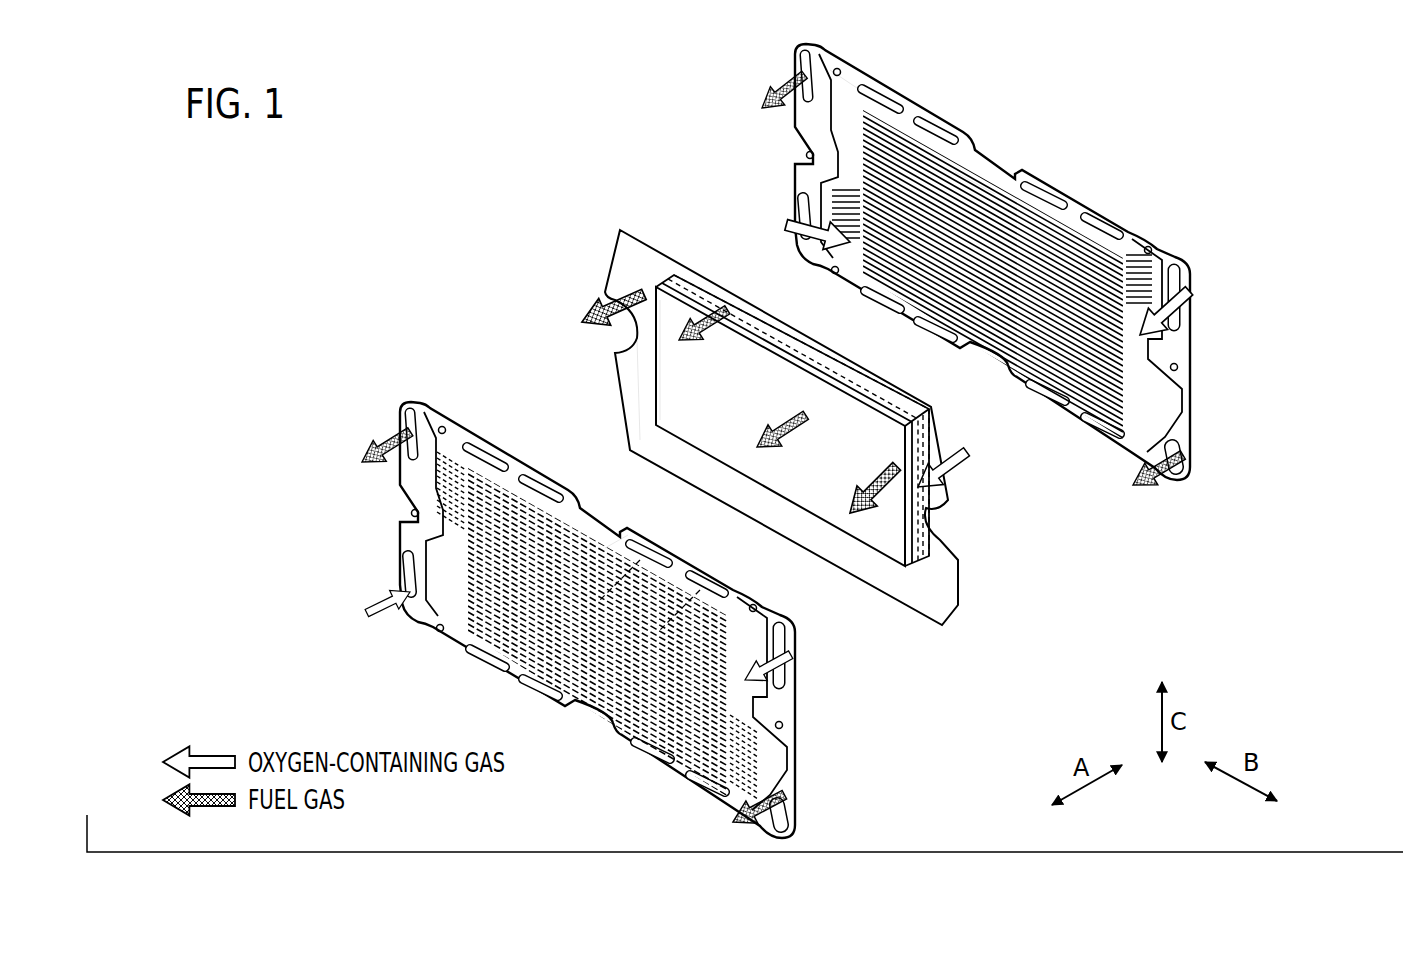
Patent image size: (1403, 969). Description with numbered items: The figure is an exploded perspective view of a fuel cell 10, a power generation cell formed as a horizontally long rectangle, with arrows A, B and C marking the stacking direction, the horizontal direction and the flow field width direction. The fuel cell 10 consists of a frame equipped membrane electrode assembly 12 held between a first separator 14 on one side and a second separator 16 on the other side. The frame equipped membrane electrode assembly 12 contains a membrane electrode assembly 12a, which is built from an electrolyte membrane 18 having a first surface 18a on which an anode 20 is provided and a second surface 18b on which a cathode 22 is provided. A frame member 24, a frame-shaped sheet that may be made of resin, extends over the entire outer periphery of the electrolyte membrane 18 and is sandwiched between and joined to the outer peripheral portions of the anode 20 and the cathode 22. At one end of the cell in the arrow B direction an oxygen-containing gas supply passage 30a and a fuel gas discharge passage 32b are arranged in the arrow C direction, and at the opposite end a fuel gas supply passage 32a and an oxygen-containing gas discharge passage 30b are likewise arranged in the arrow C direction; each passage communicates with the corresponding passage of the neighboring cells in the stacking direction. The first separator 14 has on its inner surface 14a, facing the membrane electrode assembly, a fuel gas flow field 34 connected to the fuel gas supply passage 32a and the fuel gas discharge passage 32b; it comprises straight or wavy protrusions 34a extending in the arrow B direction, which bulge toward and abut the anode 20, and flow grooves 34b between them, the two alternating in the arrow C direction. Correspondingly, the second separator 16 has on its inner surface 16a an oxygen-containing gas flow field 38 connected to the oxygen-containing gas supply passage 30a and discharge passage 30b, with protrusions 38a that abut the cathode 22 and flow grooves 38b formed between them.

The fuel cell 10 is at (320, 204).
The frame equipped membrane electrode assembly 12 is at (761, 403).
The membrane electrode assembly 12a is at (648, 386).
The first separator 14 is at (597, 618).
The inner surface 14a is at (520, 532).
The second separator 16 is at (1099, 240).
The inner surface 16a is at (845, 113).
The electrolyte membrane 18 is at (792, 415).
The first surface 18a is at (762, 352).
The second surface 18b is at (762, 307).
The anode 20 is at (835, 508).
The cathode 22 is at (849, 367).
The frame member 24 is at (628, 260).
The oxygen-containing gas supply passage 30a is at (405, 562).
The oxygen-containing gas discharge passage 30b is at (785, 667).
The fuel gas supply passage 32a is at (780, 786).
The fuel gas discharge passage 32b is at (410, 412).
The fuel gas flow field 34 is at (625, 528).
The protrusions 34a is at (698, 542).
The flow grooves 34b is at (740, 587).
The oxygen-containing gas flow field 38 is at (993, 254).
The protrusions 38a is at (1054, 170).
The flow grooves 38b is at (1000, 150).